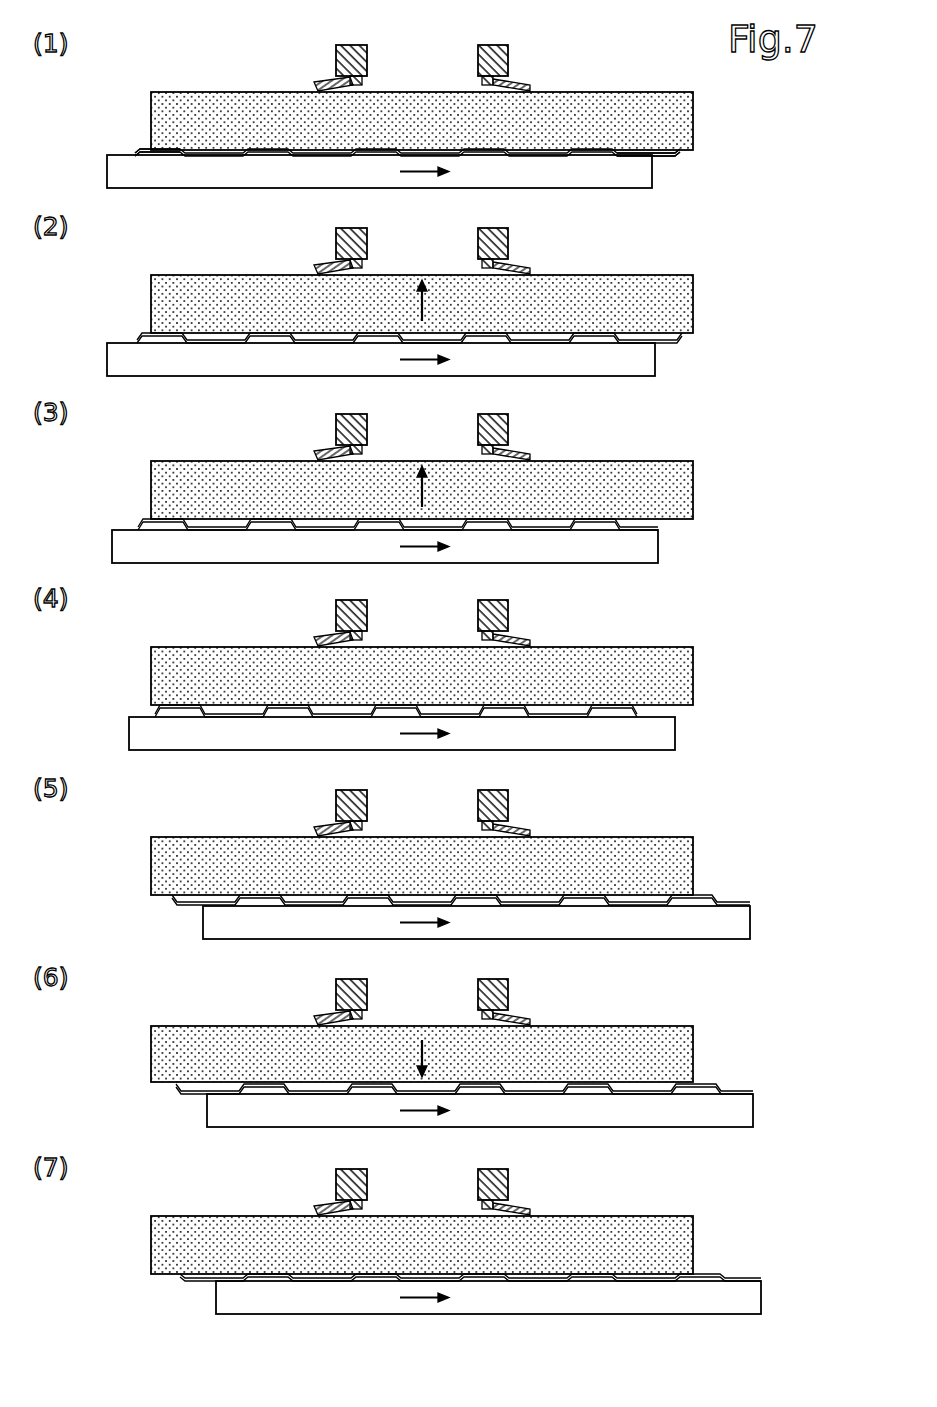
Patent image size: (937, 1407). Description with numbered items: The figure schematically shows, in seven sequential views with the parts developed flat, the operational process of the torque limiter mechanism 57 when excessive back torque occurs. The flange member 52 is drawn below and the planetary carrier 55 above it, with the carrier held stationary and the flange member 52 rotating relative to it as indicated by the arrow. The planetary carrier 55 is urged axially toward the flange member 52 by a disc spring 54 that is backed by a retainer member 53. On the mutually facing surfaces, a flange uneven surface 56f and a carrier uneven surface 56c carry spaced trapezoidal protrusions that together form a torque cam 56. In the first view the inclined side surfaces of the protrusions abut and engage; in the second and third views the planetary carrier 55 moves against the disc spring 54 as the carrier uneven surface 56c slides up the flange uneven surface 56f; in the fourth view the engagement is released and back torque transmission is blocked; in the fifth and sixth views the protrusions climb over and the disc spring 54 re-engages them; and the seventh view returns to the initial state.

The flange member 52 is at (652, 170).
The retainer member 53 is at (319, 618).
The disc spring 54 is at (531, 618).
The planetary carrier 55 is at (422, 653).
The torque cam 56 is at (139, 330).
The flange uneven surface 56f is at (140, 150).
The carrier uneven surface 56c is at (677, 152).
The torque limiter mechanism 57 is at (407, 613).